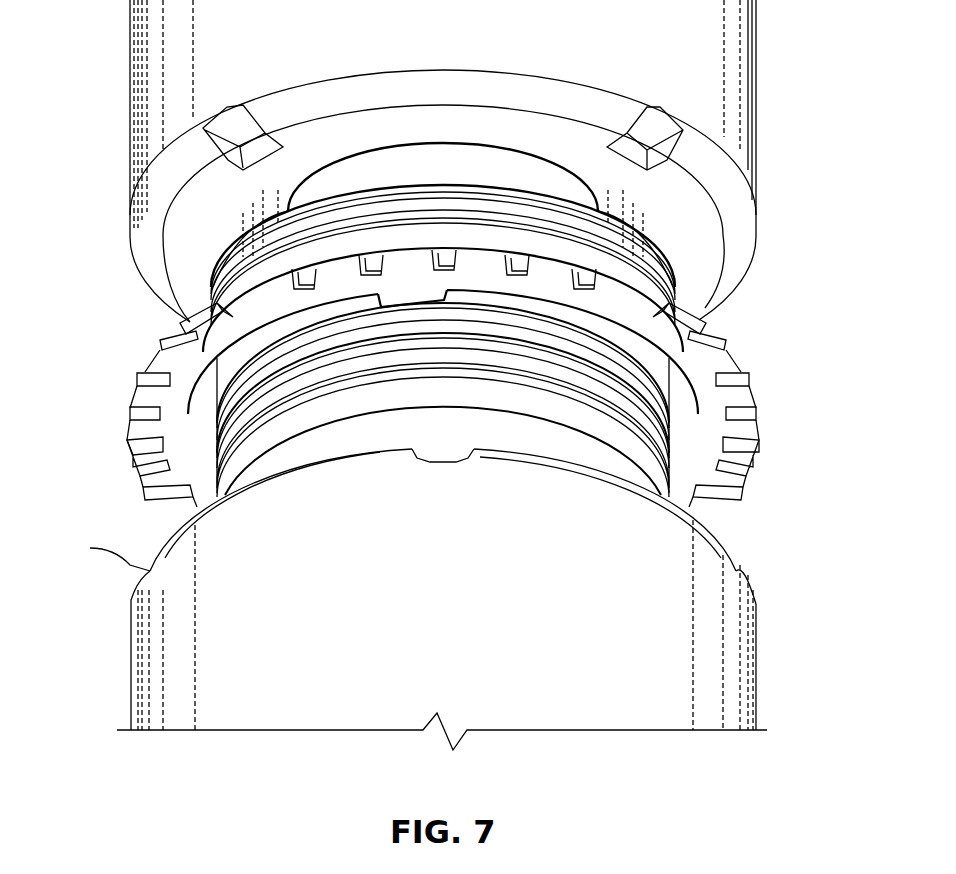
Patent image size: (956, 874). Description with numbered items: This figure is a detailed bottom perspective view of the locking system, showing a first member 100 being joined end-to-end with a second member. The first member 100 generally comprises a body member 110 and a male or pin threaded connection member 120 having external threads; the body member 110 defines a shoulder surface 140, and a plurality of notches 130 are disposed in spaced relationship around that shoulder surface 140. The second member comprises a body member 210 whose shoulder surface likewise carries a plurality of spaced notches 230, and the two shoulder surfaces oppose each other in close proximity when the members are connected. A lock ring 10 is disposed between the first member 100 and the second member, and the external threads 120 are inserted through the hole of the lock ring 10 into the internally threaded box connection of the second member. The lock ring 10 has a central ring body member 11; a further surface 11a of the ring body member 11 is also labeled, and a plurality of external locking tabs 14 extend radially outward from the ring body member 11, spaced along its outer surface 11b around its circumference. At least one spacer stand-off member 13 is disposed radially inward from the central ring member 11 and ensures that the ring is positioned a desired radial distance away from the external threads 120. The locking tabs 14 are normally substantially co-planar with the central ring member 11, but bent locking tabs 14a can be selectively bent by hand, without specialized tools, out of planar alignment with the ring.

The first member 100 is at (128, 148).
The body member 110 is at (730, 113).
The male or pin threaded connection member 120 is at (600, 266).
The notches 130 is at (236, 130).
The shoulder surface 140 is at (437, 122).
The lock ring 10 is at (760, 391).
The central ring body member 11 is at (205, 500).
The first body portion 11a is at (175, 468).
The outer surface 11b is at (150, 446).
The spacer stand-off member 13 is at (402, 278).
The external locking tabs 14 is at (166, 359).
The bent locking tabs 14a is at (252, 288).
The body member 210 is at (728, 691).
The notches 230 is at (441, 464).